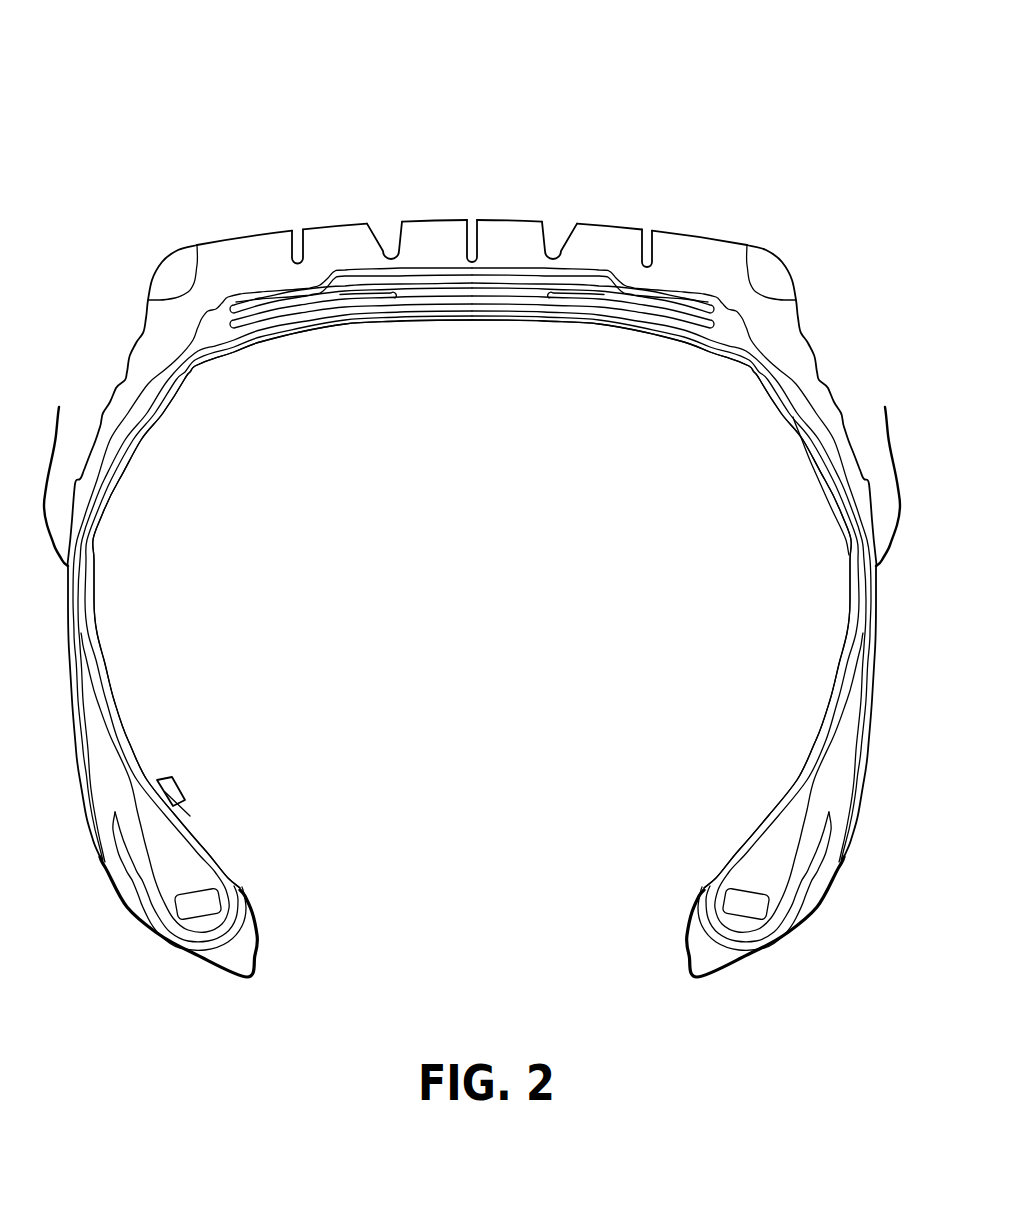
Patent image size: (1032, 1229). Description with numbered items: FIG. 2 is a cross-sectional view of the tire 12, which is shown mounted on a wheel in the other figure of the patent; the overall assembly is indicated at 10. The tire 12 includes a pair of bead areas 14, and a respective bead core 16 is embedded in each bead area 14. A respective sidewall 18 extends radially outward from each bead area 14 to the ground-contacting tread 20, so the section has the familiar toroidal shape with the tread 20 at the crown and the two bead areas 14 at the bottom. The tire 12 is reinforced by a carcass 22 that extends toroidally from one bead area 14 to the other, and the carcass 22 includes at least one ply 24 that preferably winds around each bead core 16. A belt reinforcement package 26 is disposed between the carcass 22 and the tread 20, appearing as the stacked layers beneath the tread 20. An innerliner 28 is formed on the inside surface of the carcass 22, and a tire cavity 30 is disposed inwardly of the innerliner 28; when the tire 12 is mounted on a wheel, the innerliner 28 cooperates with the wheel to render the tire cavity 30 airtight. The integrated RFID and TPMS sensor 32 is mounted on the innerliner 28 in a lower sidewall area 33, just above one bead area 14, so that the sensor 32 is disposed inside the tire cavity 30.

The tire 10 is at (804, 94).
The tire 12 is at (782, 258).
The bead area 14 is at (234, 855).
The bead core 16 is at (197, 910).
The sidewall 18 is at (473, 465).
The tread 20 is at (333, 224).
The carcass 22 is at (414, 333).
The ply 24 is at (793, 417).
The belt reinforcement package 26 is at (500, 300).
The innerliner 28 is at (217, 376).
The tire cavity 30 is at (503, 592).
The integrated RFID and TPMS sensor 32 is at (180, 768).
The lower sidewall area 33 is at (187, 818).